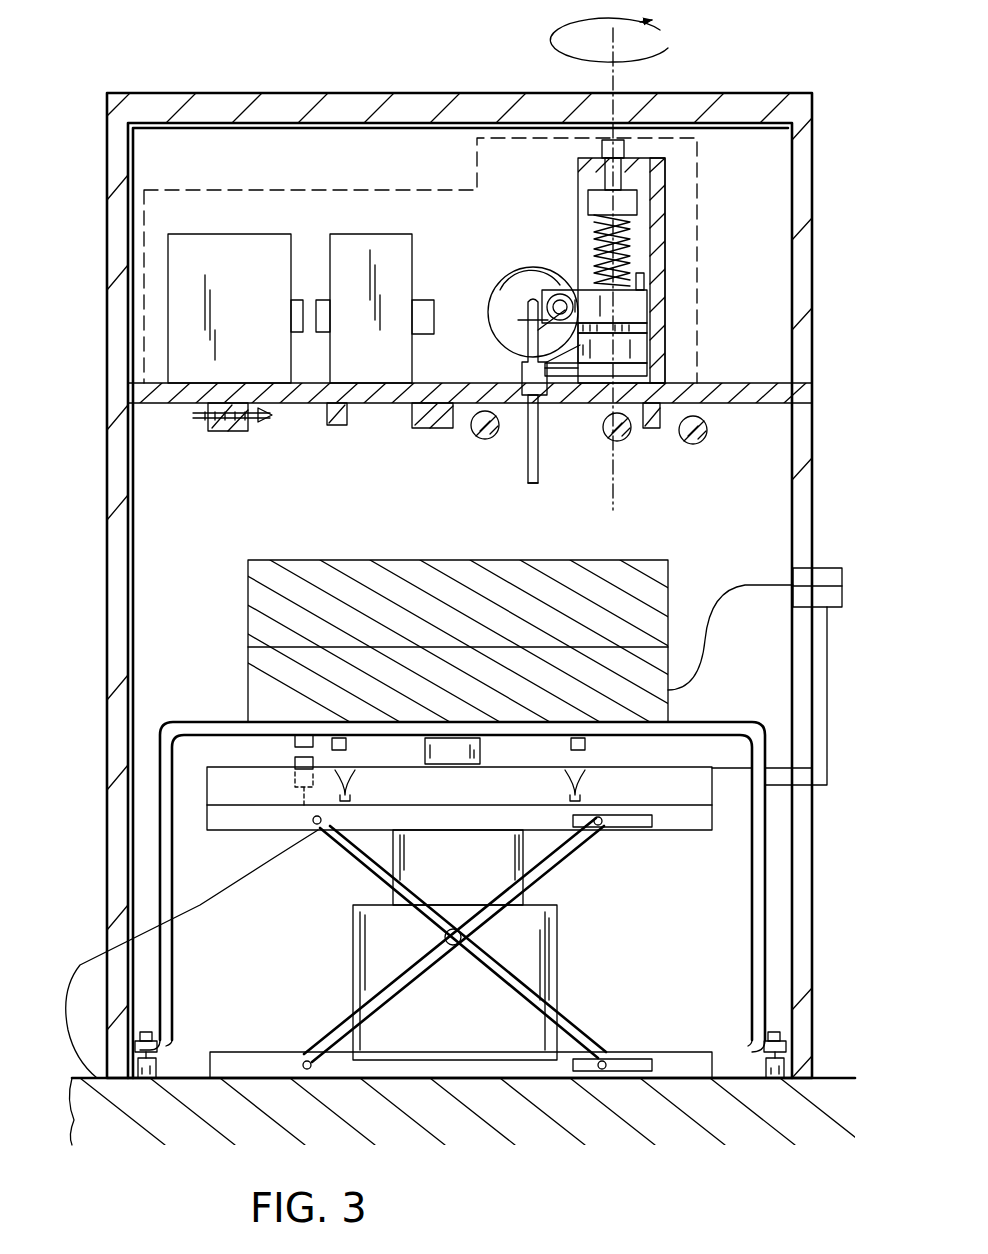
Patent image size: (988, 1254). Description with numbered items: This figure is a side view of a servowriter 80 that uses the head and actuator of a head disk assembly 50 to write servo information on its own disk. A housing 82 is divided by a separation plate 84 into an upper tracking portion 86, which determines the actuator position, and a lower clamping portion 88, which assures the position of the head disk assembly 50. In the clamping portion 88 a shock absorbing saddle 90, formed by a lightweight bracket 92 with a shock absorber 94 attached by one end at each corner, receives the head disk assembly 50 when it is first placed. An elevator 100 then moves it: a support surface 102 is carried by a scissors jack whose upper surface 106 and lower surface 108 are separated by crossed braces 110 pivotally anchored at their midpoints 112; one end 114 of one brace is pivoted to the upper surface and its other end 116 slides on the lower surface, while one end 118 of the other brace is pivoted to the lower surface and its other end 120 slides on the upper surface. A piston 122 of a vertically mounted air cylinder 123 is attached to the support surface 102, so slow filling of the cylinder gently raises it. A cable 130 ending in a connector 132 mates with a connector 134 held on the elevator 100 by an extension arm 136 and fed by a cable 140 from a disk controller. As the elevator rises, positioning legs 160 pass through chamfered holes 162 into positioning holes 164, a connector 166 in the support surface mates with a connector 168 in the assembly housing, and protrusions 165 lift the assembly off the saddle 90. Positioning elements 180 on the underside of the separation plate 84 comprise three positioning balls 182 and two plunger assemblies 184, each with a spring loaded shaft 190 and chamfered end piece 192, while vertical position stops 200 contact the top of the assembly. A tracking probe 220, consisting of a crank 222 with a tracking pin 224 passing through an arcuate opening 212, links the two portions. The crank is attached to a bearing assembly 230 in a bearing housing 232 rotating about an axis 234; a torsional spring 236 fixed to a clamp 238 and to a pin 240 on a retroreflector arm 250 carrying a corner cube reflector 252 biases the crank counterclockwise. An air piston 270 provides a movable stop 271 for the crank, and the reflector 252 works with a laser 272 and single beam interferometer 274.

The head disk assembly 50 is at (352, 552).
The servowriter 80 is at (748, 76).
The housing 82 is at (204, 92).
The separation plate 84 is at (766, 383).
The upper tracking portion 86 is at (846, 88).
The lower clamping portion 88 is at (60, 405).
The shock absorbing saddle 90 is at (736, 716).
The bracket 92 is at (768, 893).
The shock absorber 94 is at (165, 1062).
The elevator 100 is at (640, 858).
The support surface 102 is at (483, 797).
The upper surface 106 is at (447, 832).
The lower surface 108 is at (483, 1080).
The crossed braces 110 is at (416, 910).
The midpoints 112 is at (452, 929).
The one end of brace 114 is at (313, 832).
The other end of brace 116 is at (605, 1054).
The one end of other brace 118 is at (307, 1050).
The other end of other brace 120 is at (601, 830).
The piston 122 is at (520, 885).
The air cylinder 123 is at (546, 952).
The cable 130 is at (752, 586).
The connector 132 is at (833, 568).
The connector 134 is at (840, 604).
The extension arm 136 is at (830, 678).
The cable 140 is at (890, 570).
The positioning legs 160 is at (347, 742).
The chamfered holes 162 is at (360, 770).
The positioning holes 164 is at (352, 790).
The protrusions 165 is at (481, 750).
The connector 166 is at (292, 758).
The connector 168 is at (310, 738).
The positioning elements 180 is at (390, 448).
The positioning balls 182 is at (482, 440).
The plunger assemblies 184 is at (224, 432).
The spring loaded shaft 190 is at (206, 422).
The chamfered end piece 192 is at (262, 422).
The vertical position stops 200 is at (336, 426).
The arcuate opening 212 is at (520, 384).
The tracking probe 220 is at (546, 453).
The crank 222 is at (648, 355).
The tracking pin 224 is at (534, 486).
The bearing assembly 230 is at (580, 232).
The bearing housing 232 is at (666, 173).
The axis 234 is at (637, 264).
The torsional spring 236 is at (594, 228).
The clamp 238 is at (632, 203).
The pin 240 is at (645, 286).
The retroreflector arm 250 is at (648, 320).
The corner cube reflector 252 is at (556, 294).
The air piston 270 is at (366, 174).
The movable stop 271 is at (512, 310).
The laser 272 is at (253, 234).
The single beam interferometer 274 is at (349, 234).